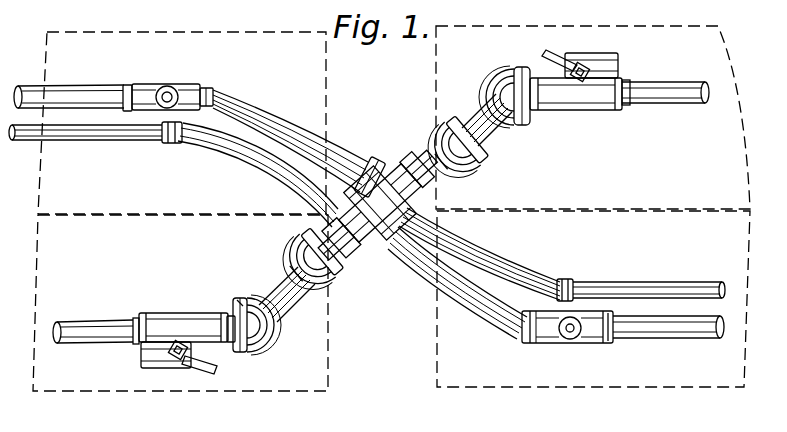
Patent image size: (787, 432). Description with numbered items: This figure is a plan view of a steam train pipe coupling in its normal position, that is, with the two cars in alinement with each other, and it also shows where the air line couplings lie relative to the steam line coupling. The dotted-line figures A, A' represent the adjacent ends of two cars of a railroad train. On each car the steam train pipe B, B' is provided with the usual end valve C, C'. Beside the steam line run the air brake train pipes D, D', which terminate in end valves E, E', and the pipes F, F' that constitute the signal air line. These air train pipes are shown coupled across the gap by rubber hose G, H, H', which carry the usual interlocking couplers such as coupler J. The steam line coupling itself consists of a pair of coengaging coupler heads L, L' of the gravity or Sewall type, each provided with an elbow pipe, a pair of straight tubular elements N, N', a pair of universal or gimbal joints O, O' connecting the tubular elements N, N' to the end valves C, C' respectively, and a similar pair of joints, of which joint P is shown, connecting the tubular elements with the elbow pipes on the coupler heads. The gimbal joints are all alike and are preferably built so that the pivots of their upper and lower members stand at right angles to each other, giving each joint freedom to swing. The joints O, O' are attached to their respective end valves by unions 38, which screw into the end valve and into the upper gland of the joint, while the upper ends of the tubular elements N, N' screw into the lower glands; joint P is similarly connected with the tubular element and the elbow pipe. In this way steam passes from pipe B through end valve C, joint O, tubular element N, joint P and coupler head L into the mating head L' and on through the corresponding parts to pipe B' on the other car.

The car end A is at (195, 211).
The car end A' is at (593, 206).
The steam train pipe B is at (96, 308).
The steam train pipe B' is at (665, 116).
The end valve C is at (187, 327).
The end valve C' is at (576, 97).
The air train pipe D is at (69, 79).
The air train pipe D' is at (668, 345).
The end valve E is at (168, 82).
The end valve E' is at (567, 344).
The signal air line pipe F is at (95, 150).
The signal air line pipe F' is at (641, 272).
The rubber hose G is at (297, 126).
The rubber hose H is at (258, 175).
The rubber hose H' is at (479, 254).
The interlocking coupler J is at (385, 235).
The coupler head L is at (338, 265).
The coupler head L' is at (412, 154).
The tubular element N is at (291, 309).
The tubular element N' is at (476, 114).
The gimbal joint O is at (257, 358).
The gimbal joint O' is at (522, 112).
The gimbal joint P is at (308, 250).
The union 38 is at (233, 300).